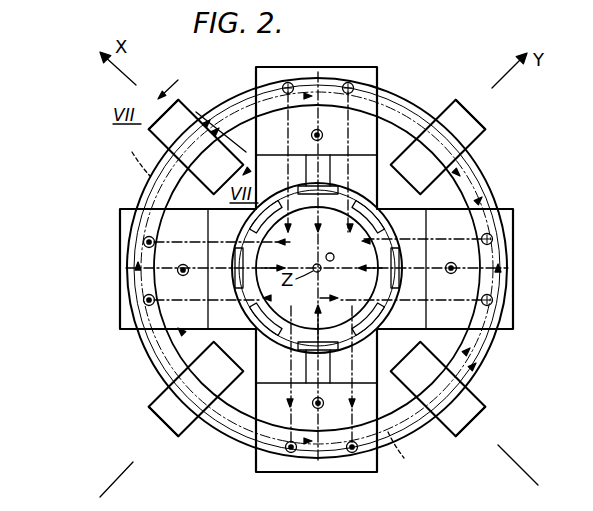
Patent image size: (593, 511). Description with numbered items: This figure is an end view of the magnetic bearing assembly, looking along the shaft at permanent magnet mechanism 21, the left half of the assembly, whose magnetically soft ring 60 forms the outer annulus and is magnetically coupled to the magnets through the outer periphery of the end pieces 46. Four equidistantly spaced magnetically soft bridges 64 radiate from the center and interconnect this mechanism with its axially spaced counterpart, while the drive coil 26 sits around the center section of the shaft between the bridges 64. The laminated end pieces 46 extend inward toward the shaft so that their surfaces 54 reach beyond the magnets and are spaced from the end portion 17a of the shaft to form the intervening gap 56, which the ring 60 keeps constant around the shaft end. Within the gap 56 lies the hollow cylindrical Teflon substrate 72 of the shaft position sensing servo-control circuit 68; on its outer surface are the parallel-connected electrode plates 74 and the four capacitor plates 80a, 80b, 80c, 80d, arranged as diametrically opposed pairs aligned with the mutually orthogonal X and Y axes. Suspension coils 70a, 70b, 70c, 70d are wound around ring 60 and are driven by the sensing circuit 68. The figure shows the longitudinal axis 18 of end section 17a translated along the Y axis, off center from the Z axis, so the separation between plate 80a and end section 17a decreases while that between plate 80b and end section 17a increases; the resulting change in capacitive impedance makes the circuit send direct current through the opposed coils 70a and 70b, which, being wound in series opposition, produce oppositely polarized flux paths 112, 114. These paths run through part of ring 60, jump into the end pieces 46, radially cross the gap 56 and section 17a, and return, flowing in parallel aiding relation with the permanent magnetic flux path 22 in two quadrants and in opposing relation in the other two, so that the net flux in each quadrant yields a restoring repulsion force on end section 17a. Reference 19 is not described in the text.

The magnetically soft bridges 64 is at (369, 68).
The magnetically soft ring 60 is at (150, 191).
The permanent magnetic flux path 22 is at (335, 140).
The outer end pieces 46 is at (404, 108).
The drive coil 26 is at (243, 122).
The capacitor plate 80a is at (438, 147).
The capacitor plate 80b is at (196, 389).
The capacitor plate 80c is at (438, 389).
The capacitor plate 80d is at (196, 147).
The suspension coil 70a is at (149, 133).
The suspension coil 70b is at (487, 411).
The suspension coil 70c is at (484, 121).
The suspension coil 70d is at (177, 438).
The magnetic flux path 112 is at (150, 162).
The magnetic flux path 114 is at (402, 450).
The hollow cylindrical substrate 72 is at (232, 285).
The end portion of the shaft 17a is at (362, 283).
The electrode plates 74 is at (321, 204).
The intervening gap 56 is at (375, 307).
The shaft position sensing servo-control circuit 68 is at (250, 372).
The surfaces of end pieces 54 is at (318, 153).
The longitudinal axis of the shaft 18 is at (327, 254).
The permanent magnet mechanism 21 is at (110, 290).
The apparatus 19 is at (544, 362).